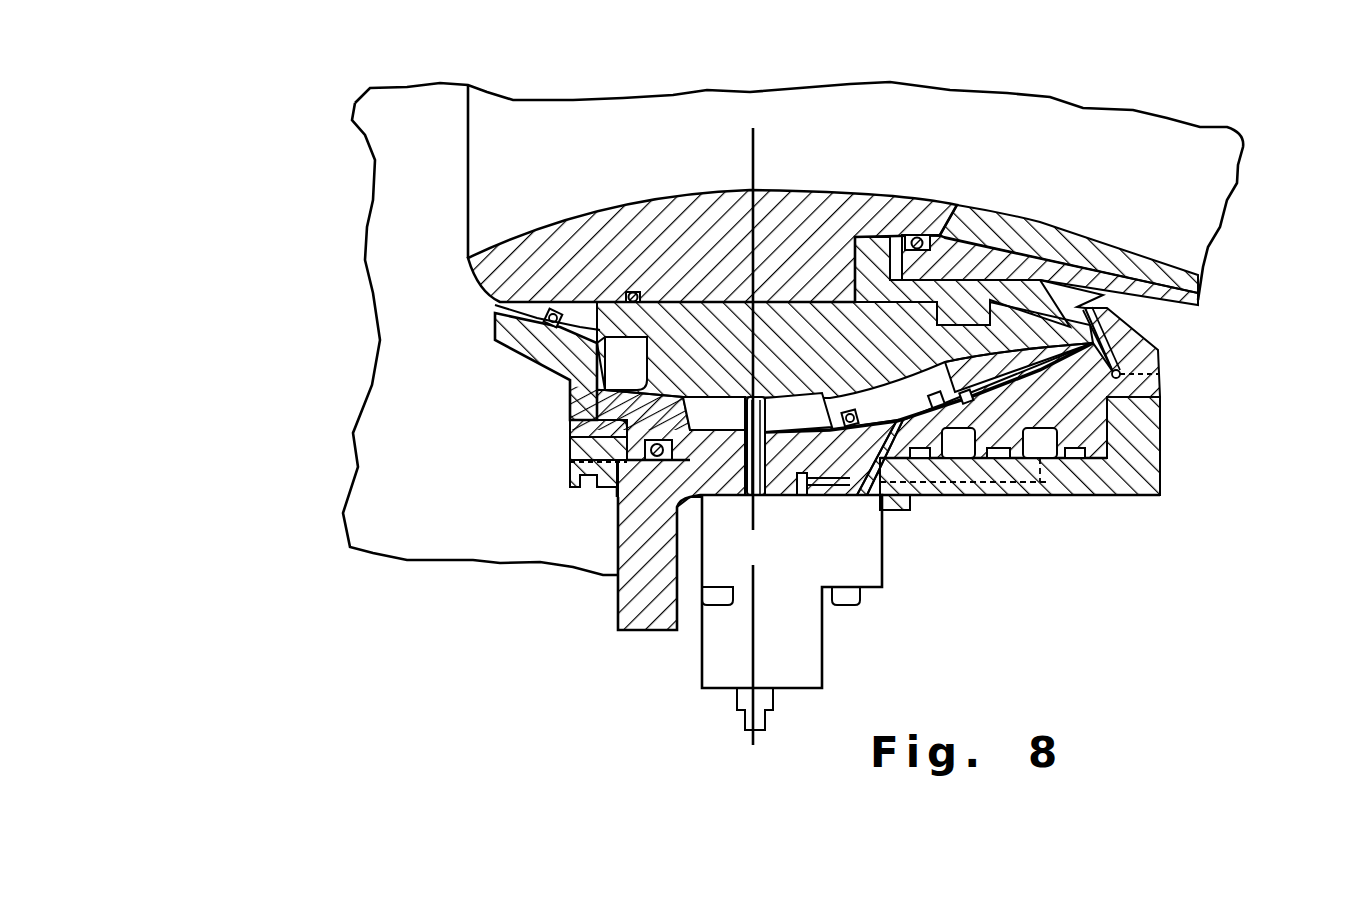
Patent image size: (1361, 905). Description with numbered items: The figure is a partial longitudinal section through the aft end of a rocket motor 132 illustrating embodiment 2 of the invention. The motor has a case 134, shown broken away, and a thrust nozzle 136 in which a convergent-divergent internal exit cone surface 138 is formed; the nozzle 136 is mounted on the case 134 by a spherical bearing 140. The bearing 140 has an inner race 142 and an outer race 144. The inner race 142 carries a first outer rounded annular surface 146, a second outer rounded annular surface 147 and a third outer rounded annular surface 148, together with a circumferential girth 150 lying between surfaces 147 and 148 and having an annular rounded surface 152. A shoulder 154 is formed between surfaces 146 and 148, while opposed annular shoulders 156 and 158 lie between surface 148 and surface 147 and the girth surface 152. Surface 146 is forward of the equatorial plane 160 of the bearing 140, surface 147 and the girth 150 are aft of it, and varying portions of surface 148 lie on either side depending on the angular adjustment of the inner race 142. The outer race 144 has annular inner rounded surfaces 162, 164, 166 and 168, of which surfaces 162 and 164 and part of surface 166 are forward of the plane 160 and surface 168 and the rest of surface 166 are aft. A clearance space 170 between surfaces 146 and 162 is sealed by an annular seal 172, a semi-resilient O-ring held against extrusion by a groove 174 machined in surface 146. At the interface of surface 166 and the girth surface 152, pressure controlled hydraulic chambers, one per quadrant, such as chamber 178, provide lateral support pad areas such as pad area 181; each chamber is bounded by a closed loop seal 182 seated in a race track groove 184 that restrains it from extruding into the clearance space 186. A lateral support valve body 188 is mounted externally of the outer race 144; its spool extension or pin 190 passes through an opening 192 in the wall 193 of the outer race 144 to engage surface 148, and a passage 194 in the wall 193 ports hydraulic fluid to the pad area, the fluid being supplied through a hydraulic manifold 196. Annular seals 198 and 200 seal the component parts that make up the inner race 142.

The embodiment 2 is at (325, 286).
The rocket motor 132 is at (413, 142).
The case 134 is at (430, 87).
The thrust nozzle 136 is at (1200, 273).
The internal exit cone surface 138 is at (917, 202).
The spherical bearing 140 is at (497, 382).
The inner race 142 is at (670, 368).
The outer race 144 is at (1112, 405).
The first outer rounded annular surface 146 is at (600, 372).
The second outer rounded annular surface 147 is at (1078, 322).
The third outer rounded annular surface 148 is at (657, 508).
The circumferential girth 150 is at (840, 468).
The annular rounded surface 152 is at (950, 500).
The shoulder 154 is at (578, 428).
The annular shoulder 156 is at (831, 444).
The annular shoulder 158 is at (957, 368).
The equatorial plane 160 is at (757, 172).
The annular inner rounded surface 162 is at (587, 340).
The annular inner rounded surface 164 is at (580, 450).
The annular inner rounded surface 166 is at (779, 462).
The annular inner rounded surface 168 is at (1107, 297).
The clearance space 170 is at (495, 302).
The annular seal 172 is at (551, 312).
The groove 174 is at (583, 318).
The hydraulic chamber 178 is at (868, 422).
The pad area 181 is at (905, 405).
The closed loop seal 182 is at (850, 410).
The race track groove 184 is at (990, 478).
The clearance space 186 is at (965, 403).
The lateral support valve body 188 is at (865, 570).
The spool extension 190 is at (720, 440).
The opening 192 is at (620, 570).
The wall 193 is at (733, 483).
The passage 194 is at (905, 507).
The hydraulic manifold 196 is at (1040, 508).
The annular seal 198 is at (632, 292).
The annular seal 200 is at (910, 238).